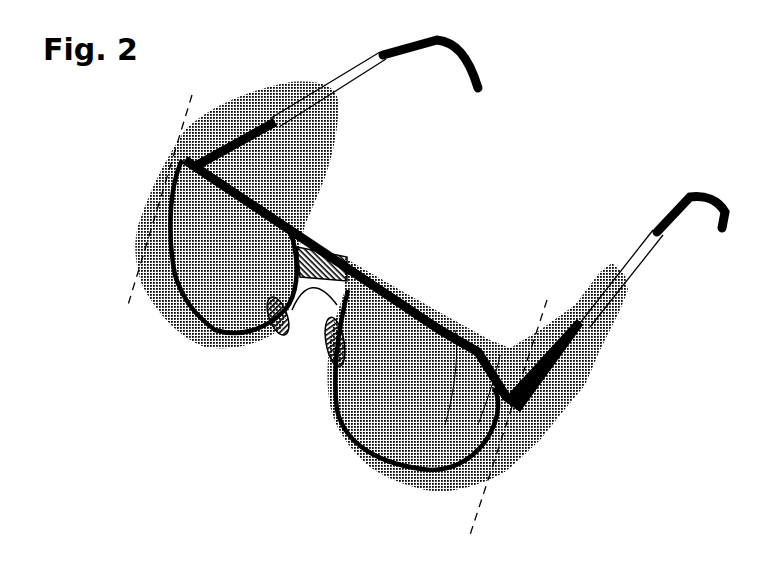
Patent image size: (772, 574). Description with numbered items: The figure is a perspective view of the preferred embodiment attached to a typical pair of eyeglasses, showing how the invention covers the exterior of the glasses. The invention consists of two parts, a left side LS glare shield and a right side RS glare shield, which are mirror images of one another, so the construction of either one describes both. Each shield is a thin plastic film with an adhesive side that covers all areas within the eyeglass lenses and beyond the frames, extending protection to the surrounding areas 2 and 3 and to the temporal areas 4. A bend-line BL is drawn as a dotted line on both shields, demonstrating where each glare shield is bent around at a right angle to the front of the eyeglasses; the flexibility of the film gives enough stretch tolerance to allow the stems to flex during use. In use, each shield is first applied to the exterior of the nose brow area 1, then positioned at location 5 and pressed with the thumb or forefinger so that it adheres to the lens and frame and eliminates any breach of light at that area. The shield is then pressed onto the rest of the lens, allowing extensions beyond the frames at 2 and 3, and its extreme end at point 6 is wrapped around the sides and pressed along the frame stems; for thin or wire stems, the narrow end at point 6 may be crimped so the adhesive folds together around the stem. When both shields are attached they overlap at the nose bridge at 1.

The nose brow area 1 is at (338, 257).
The surrounding area 2 is at (281, 211).
The surrounding area 3 is at (187, 313).
The temporal area 4 is at (257, 113).
The location 5 is at (323, 343).
The point 6 is at (313, 83).
The bend-line BL is at (330, 321).
The right side glare shield RS is at (227, 250).
The left side glare shield LS is at (407, 383).